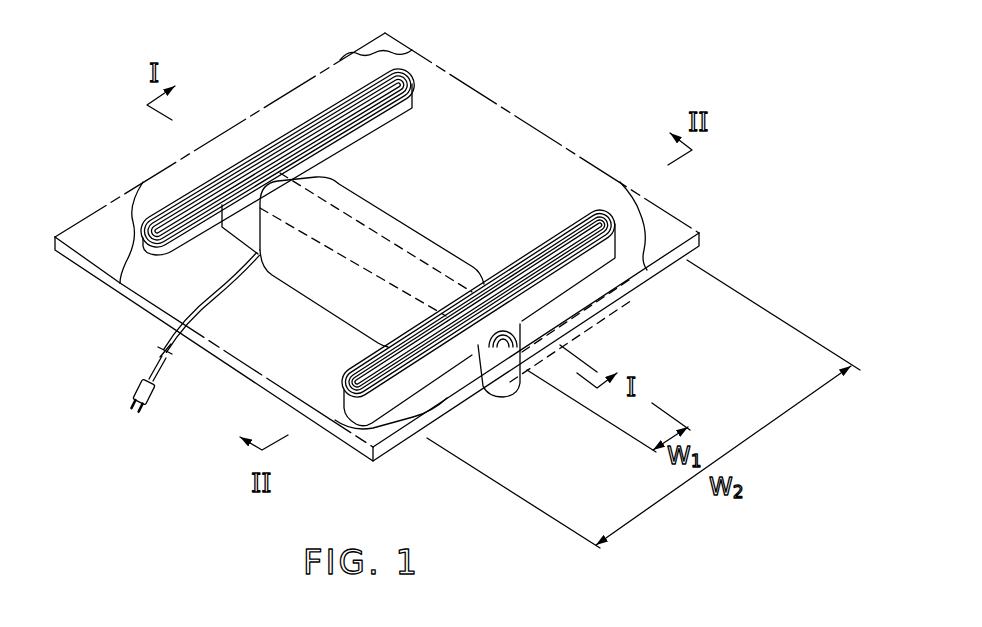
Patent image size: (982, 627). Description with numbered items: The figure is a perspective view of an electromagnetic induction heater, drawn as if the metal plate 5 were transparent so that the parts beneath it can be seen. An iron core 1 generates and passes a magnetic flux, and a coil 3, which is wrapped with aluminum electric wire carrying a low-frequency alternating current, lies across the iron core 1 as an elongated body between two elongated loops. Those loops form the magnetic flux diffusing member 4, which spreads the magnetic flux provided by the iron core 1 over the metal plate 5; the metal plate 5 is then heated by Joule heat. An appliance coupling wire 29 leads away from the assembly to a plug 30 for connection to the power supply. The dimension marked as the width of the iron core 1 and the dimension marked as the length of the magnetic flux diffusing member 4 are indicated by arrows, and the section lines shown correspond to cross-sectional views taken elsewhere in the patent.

The iron core 1 is at (503, 398).
The coil 3 is at (406, 223).
The magnetic flux diffusing member 4 is at (337, 98).
The metal plate 5 is at (493, 101).
The appliance coupling wire 29 is at (158, 337).
The plug 30 is at (133, 390).